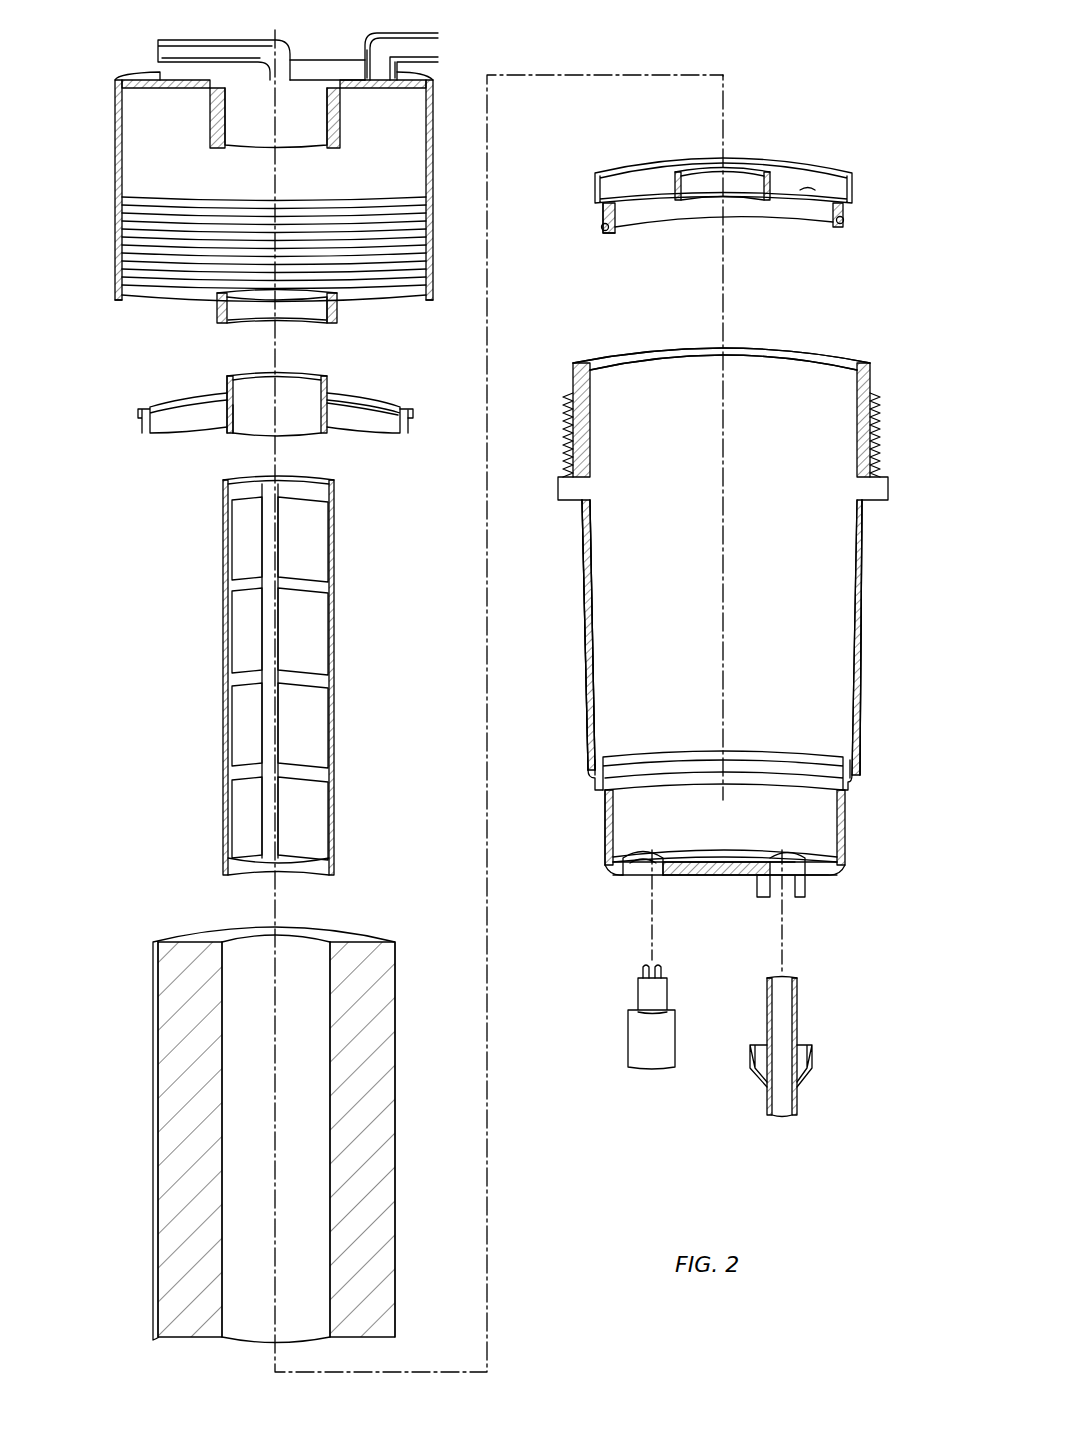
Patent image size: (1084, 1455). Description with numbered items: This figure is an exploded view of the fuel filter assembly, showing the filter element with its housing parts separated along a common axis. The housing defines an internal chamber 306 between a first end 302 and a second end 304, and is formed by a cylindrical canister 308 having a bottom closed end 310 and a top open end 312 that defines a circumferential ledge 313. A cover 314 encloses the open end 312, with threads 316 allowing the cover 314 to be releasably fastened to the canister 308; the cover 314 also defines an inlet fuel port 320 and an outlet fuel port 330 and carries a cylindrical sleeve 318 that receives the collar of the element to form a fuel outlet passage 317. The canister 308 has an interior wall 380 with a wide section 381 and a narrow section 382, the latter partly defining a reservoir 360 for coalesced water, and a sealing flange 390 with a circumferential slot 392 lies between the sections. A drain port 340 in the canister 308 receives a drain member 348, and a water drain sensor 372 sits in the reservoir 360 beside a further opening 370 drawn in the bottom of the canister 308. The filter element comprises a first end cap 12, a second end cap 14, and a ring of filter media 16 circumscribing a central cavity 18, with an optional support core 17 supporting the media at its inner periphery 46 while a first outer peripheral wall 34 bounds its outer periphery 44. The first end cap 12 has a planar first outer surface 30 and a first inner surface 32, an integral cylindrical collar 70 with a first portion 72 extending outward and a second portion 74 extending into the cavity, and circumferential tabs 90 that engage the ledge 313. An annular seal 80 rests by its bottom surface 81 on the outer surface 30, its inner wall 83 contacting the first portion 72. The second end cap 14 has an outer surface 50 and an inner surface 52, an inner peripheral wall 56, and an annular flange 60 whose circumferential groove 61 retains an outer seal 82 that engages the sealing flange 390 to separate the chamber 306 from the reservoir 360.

The first end cap 12 is at (170, 388).
The second end cap 14 is at (808, 102).
The filter media 16 is at (162, 910).
The support core 17 is at (225, 585).
The central cavity 18 is at (224, 1043).
The first outer surface 30 is at (368, 400).
The first inner surface 32 is at (340, 415).
The first outer peripheral wall 34 is at (400, 425).
The outer periphery 44 is at (396, 968).
The inner periphery 46 is at (335, 1090).
The outer surface 50 is at (798, 205).
The inner surface 52 is at (808, 188).
The inner peripheral wall 56 is at (675, 182).
The annular flange 60 is at (600, 212).
The circumferential groove 61 is at (628, 228).
The cylindrical collar 70 is at (300, 370).
The first portion 72 is at (233, 395).
The second portion 74 is at (230, 422).
The annular seal 80 is at (338, 300).
The bottom surface 81 is at (334, 316).
The outer seal 82 is at (845, 222).
The inner wall 83 is at (324, 306).
The circumferential tabs 90 is at (140, 412).
The first end 302 is at (296, 62).
The second end 304 is at (722, 878).
The internal chamber 306 is at (820, 568).
The cylindrical canister 308 is at (626, 338).
The closed end 310 is at (725, 905).
The open end 312 is at (850, 358).
The circumferential ledge 313 is at (774, 345).
The cover 314 is at (128, 72).
The threads 316 is at (424, 250).
The fuel outlet passage 317 is at (246, 100).
The cylindrical sleeve 318 is at (340, 115).
The inlet fuel port 320 is at (375, 72).
The outlet fuel port 330 is at (283, 72).
The drain port 340 is at (805, 866).
The drain member 348 is at (815, 992).
The reservoir 360 is at (810, 812).
The sensor port 370 is at (630, 870).
The water drain sensor 372 is at (633, 962).
The interior wall 380 is at (592, 684).
The wide section 381 is at (542, 635).
The narrow section 382 is at (620, 825).
The sealing flange 390 is at (598, 766).
The circumferential slot 392 is at (822, 758).